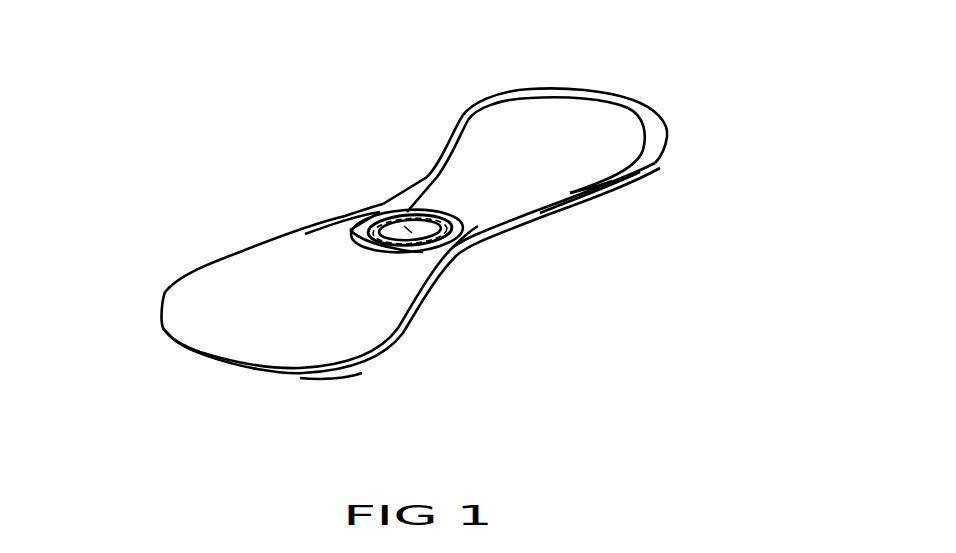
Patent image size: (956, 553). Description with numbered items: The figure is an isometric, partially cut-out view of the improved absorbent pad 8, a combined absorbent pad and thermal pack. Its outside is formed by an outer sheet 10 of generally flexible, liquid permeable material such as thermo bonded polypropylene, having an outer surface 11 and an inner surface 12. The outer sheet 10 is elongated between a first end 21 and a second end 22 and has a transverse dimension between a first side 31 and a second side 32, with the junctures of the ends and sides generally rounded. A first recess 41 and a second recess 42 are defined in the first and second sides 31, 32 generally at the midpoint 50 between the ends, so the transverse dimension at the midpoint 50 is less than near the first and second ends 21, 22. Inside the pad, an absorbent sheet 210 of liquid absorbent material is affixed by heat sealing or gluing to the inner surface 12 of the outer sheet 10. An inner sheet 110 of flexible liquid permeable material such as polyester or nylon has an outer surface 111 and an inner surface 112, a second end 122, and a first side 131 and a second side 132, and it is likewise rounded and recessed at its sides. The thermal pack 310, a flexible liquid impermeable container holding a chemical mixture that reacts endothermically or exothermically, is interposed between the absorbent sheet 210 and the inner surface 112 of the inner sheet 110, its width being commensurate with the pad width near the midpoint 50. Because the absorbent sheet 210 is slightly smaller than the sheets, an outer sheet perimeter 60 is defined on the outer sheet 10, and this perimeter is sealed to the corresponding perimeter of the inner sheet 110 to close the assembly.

The improved absorbent pad 8 is at (216, 123).
The outer sheet 10 is at (443, 278).
The outer surface 11 is at (360, 372).
The inner surface 12 is at (393, 303).
The first end 21 is at (200, 357).
The second end 22 is at (660, 102).
The first side 31 is at (655, 162).
The second side 32 is at (240, 250).
The first recess 41 is at (473, 235).
The second recess 42 is at (383, 200).
The midpoint 50 is at (348, 150).
The outer sheet perimeter 60 is at (183, 303).
The inner sheet 110 is at (563, 110).
The outer surface 111 is at (460, 177).
The inner surface 112 is at (458, 222).
The second end 122 is at (613, 100).
The first side 131 is at (608, 180).
The second side 132 is at (513, 115).
The absorbent sheet 210 is at (360, 242).
The thermal pack 310 is at (423, 180).